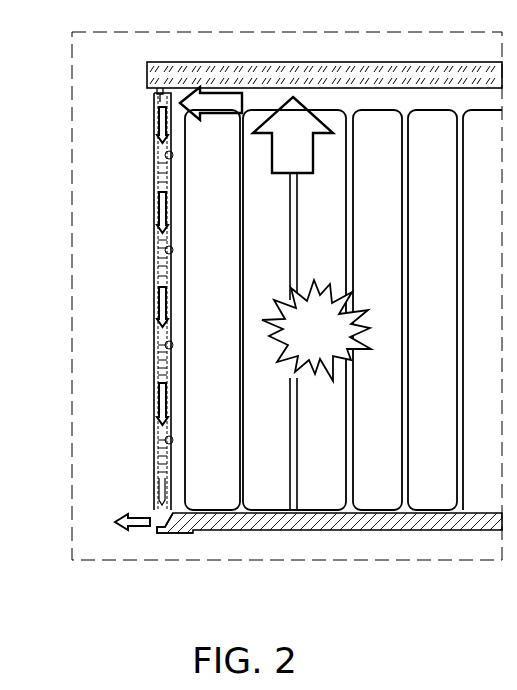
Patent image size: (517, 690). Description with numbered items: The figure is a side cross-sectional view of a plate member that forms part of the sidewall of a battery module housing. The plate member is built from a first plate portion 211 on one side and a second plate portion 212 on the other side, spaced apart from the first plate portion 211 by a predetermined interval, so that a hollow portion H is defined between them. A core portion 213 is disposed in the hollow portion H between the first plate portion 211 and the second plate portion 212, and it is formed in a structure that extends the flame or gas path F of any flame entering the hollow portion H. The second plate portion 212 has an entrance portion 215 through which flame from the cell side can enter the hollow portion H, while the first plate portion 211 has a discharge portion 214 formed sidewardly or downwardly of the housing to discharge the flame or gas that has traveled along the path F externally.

The entrance portion 215 is at (157, 95).
The flame or gas path F is at (155, 123).
The second plate portion 212 is at (157, 157).
The first plate portion 211 is at (155, 170).
The core portion 213 is at (157, 255).
The hollow portion H is at (157, 485).
The discharge portion 214 is at (157, 534).